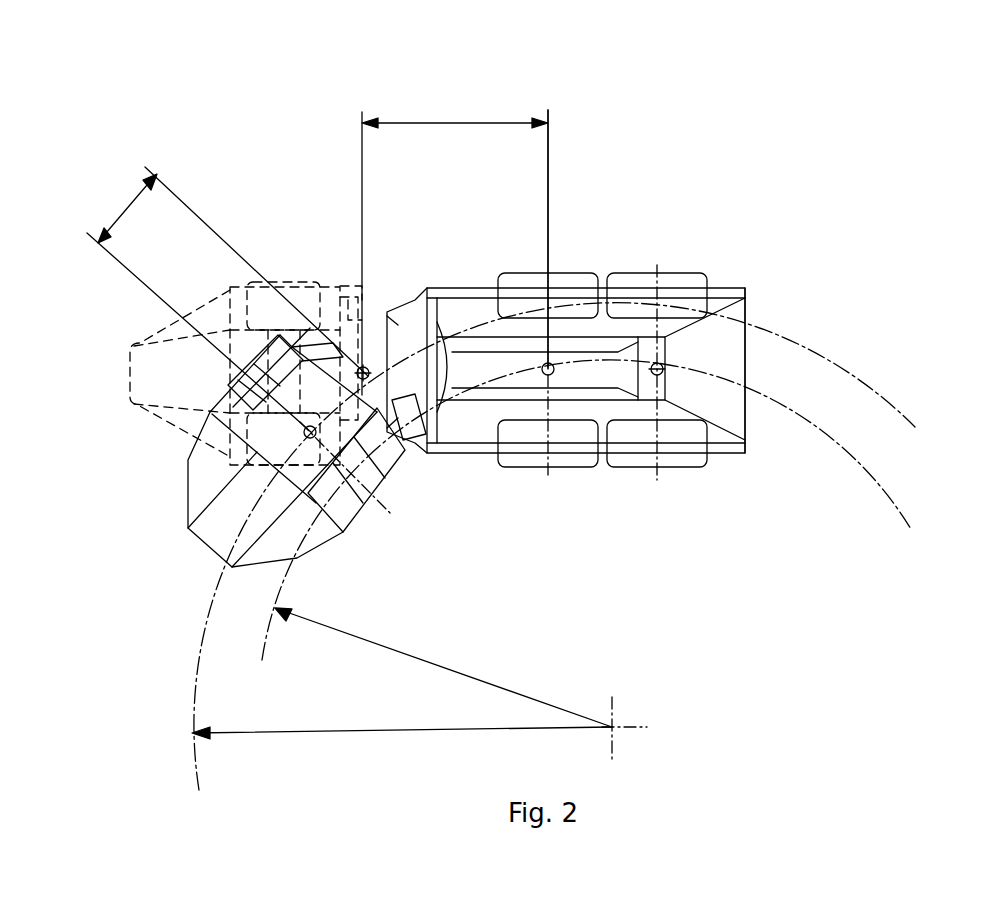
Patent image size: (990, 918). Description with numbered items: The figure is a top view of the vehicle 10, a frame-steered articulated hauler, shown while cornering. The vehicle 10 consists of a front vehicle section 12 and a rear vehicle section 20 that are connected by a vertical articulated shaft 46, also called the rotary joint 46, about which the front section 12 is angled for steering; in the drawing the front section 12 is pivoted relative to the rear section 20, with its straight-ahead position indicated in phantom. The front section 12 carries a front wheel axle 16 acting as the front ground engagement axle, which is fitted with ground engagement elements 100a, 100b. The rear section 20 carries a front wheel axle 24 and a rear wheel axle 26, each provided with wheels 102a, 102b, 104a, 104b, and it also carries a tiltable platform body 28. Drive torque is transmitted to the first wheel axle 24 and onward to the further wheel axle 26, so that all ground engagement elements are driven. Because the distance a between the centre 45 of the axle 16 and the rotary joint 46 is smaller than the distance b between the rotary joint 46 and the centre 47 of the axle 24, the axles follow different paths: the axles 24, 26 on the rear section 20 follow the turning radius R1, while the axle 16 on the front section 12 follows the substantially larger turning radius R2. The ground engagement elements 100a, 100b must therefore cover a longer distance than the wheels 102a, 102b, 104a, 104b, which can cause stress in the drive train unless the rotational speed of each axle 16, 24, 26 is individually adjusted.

The vehicle 10 is at (724, 148).
The front vehicle section 12 is at (244, 413).
The front wheel axle 16 is at (386, 494).
The rear vehicle section 20 is at (635, 334).
The front wheel axle of rear section 24 is at (543, 262).
The rear wheel axle 26 is at (665, 262).
The tiltable platform body 28 is at (728, 437).
The centre of the axle 45 is at (303, 432).
The vertical articulated shaft 46 is at (360, 366).
The centre of the axle 47 is at (553, 373).
The ground engagement element 100a is at (356, 470).
The ground engagement element 100b is at (265, 372).
The wheel 102a is at (520, 470).
The wheel 102b is at (505, 272).
The wheel 104a is at (668, 470).
The wheel 104b is at (612, 272).
The distance a is at (125, 210).
The distance b is at (453, 125).
The turning radius R1 is at (452, 660).
The turning radius R2 is at (368, 727).